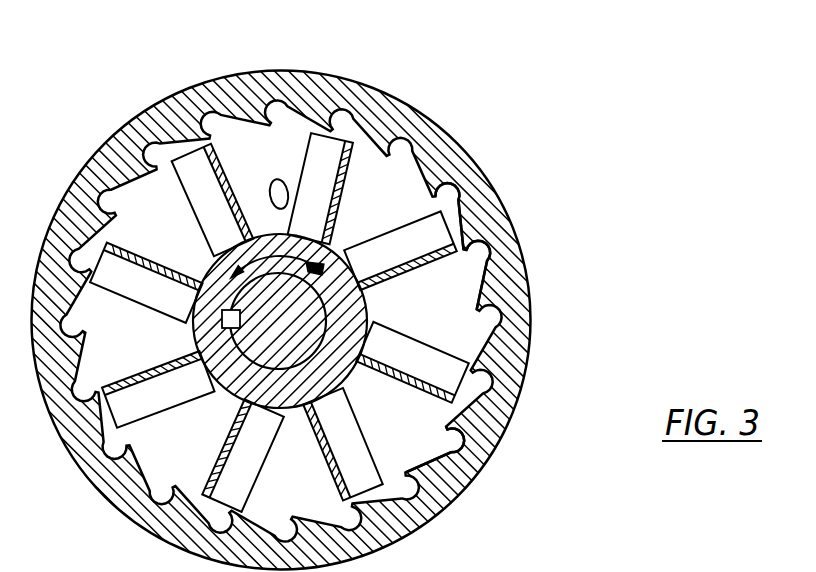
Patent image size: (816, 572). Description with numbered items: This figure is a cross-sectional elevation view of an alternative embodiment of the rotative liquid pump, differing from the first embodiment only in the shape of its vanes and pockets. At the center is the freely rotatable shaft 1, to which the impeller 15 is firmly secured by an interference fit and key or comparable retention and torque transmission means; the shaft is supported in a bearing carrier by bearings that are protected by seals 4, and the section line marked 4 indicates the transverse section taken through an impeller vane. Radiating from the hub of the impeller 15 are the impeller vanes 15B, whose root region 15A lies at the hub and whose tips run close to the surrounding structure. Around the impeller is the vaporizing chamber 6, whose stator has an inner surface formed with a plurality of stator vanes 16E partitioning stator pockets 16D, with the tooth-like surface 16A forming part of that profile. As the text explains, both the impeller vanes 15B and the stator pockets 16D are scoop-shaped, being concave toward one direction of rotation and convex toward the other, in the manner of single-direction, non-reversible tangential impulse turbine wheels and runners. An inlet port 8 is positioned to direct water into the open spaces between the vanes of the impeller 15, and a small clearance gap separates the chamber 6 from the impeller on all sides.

The shaft 1 is at (487, 437).
The vaporizing chamber 6 is at (424, 108).
The inlet port 8 is at (283, 178).
The impeller 15 is at (352, 130).
The vane root 15A is at (332, 253).
The impeller vane 15B is at (500, 344).
The tooth surface 16A is at (503, 213).
The stator pocket 16D is at (483, 250).
The stator vane 16E is at (468, 486).
The seal 4 is at (130, 221).